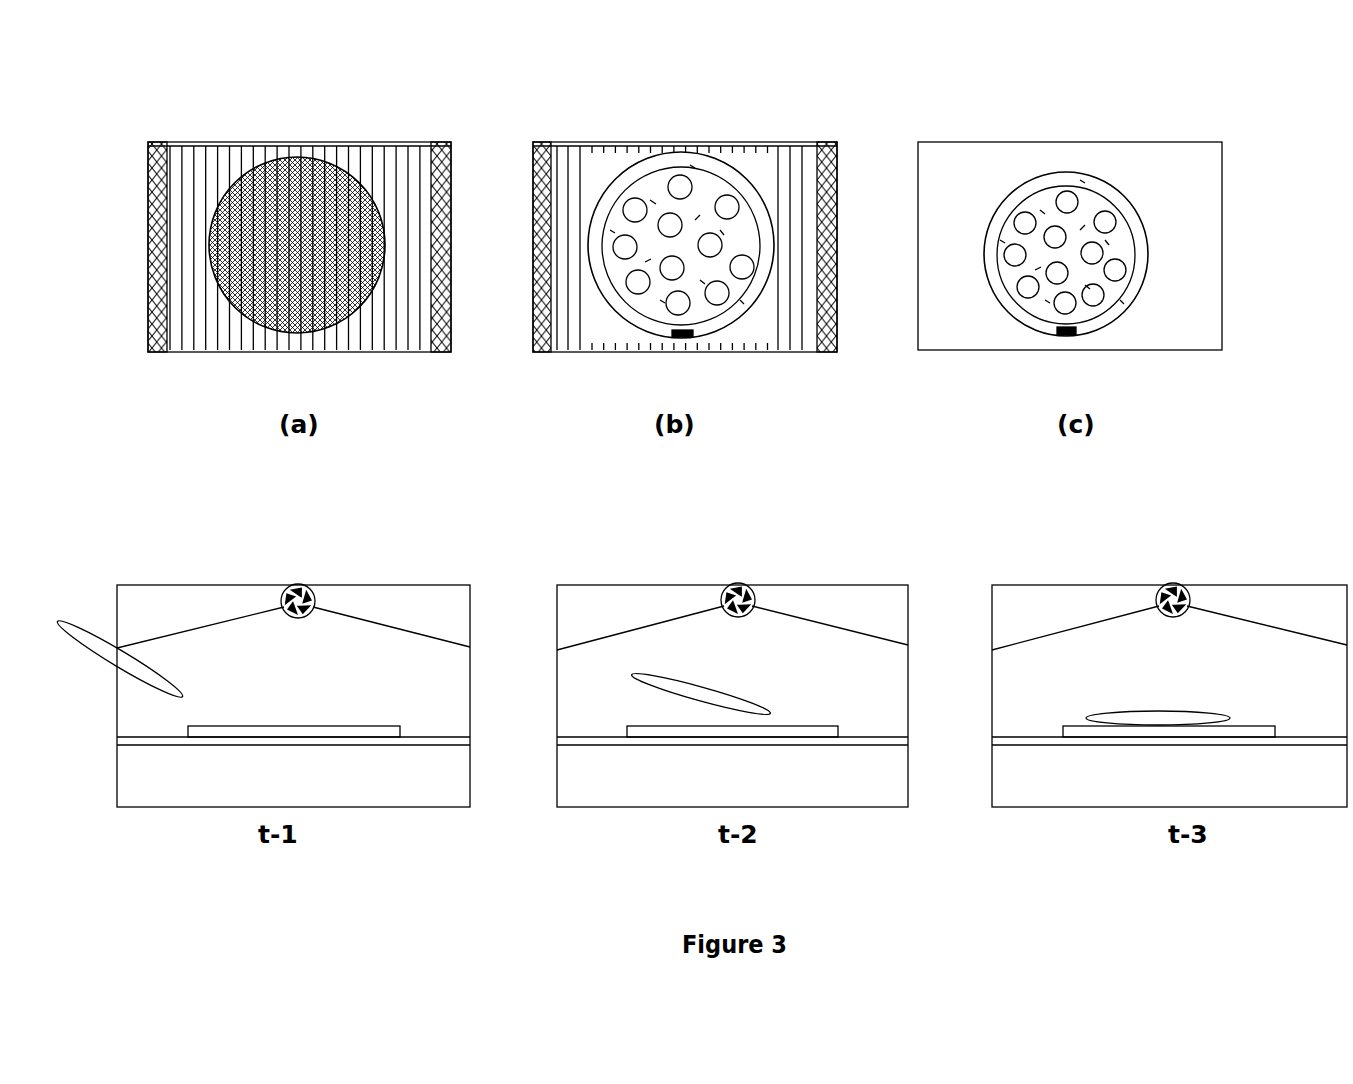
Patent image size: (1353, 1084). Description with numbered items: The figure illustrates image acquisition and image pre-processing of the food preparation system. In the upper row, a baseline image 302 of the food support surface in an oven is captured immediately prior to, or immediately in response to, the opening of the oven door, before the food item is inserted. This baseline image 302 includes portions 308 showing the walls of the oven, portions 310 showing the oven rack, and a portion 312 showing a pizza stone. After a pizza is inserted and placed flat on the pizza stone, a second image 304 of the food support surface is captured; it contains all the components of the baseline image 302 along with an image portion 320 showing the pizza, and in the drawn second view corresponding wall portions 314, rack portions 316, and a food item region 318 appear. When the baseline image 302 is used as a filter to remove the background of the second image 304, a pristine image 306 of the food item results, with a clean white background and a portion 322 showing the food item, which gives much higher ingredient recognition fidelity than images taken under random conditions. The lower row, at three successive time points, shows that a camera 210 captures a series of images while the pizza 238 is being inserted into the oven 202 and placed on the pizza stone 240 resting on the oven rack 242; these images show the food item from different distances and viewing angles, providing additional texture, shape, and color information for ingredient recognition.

The oven 202 is at (417, 585).
The camera 210 is at (310, 590).
The pizza 238 is at (58, 623).
The pizza stone 240 is at (290, 730).
The oven rack 242 is at (445, 733).
The baseline image 302 is at (191, 137).
The image 304 is at (593, 137).
The pristine image 306 is at (1019, 140).
The portions 308 is at (154, 163).
The portions 310 is at (218, 165).
The portion 312 is at (370, 195).
The border region 314 is at (538, 167).
The striped background region 316 is at (603, 168).
The food item 318 is at (755, 203).
The image portion 320 is at (697, 193).
The portion 322 is at (1130, 172).